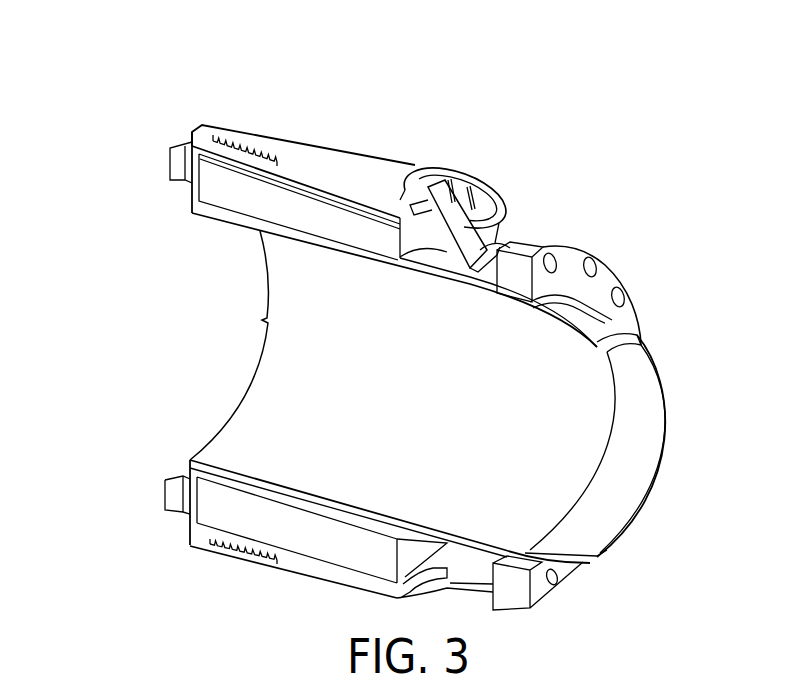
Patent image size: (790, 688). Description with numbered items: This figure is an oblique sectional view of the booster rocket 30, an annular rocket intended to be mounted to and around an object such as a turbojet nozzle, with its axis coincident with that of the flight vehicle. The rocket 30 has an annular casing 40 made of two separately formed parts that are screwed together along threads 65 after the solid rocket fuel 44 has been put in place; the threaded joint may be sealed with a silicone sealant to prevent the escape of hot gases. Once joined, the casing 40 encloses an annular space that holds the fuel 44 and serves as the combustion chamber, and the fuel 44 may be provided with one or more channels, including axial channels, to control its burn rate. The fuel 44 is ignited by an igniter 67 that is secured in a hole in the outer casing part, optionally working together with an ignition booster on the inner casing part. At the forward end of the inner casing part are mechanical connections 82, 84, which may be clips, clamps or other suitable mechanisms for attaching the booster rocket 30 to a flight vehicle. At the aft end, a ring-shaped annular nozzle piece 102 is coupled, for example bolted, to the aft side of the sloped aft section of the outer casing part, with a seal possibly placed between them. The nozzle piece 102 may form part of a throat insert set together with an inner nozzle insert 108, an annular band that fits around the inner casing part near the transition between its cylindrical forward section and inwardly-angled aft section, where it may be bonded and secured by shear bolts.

The booster rocket 30 is at (189, 100).
The annular casing 40 is at (322, 120).
The solid rocket fuel (propellant) 44 is at (373, 187).
The threads 65 is at (230, 142).
The igniter 67 is at (450, 220).
The mechanical connection 82 is at (190, 142).
The mechanical connection 84 is at (183, 473).
The annular nozzle piece 102 is at (607, 280).
The inner nozzle insert 108 is at (603, 320).